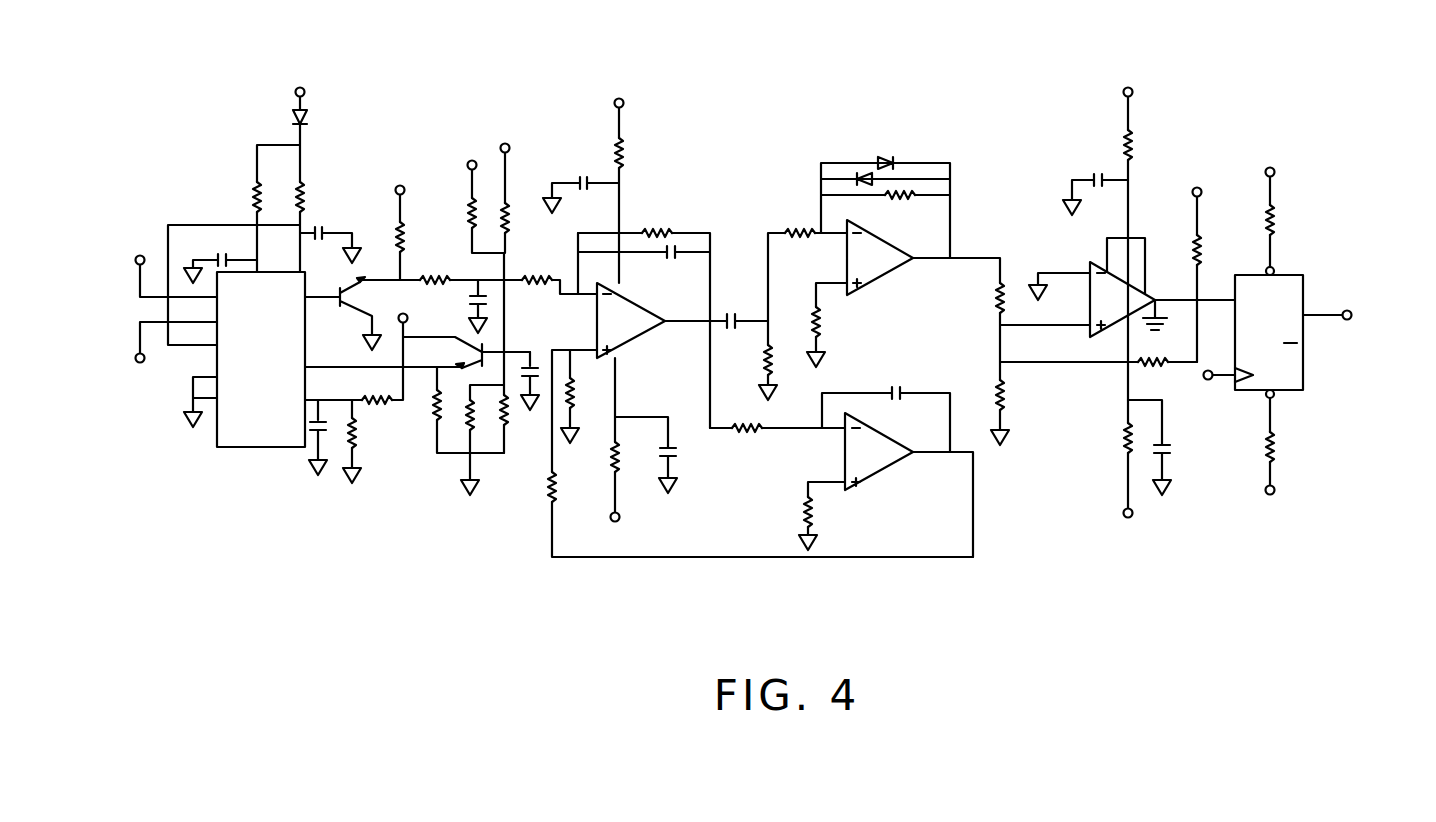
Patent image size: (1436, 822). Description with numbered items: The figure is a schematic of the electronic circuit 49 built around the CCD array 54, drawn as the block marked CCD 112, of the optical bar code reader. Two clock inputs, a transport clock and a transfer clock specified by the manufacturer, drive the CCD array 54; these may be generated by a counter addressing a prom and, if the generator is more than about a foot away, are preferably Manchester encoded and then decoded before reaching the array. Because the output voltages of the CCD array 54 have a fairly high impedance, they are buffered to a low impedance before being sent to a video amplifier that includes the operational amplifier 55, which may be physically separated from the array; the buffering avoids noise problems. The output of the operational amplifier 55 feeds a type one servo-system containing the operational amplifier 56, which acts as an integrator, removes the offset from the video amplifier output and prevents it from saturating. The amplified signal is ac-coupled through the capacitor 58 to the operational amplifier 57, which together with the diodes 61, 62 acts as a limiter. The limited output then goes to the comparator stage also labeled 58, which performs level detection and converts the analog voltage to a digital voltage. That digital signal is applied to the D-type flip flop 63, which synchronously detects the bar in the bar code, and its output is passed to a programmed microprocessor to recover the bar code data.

The electronic circuit 49 is at (765, 50).
The CCD array 54 is at (267, 450).
The CCD sensor 112 is at (261, 359).
The operational amplifier 55 is at (628, 322).
The operational amplifier 56 is at (875, 476).
The operational amplifier 57 is at (882, 274).
The capacitor 58 is at (749, 318).
The diode 61 is at (906, 142).
The diode 62 is at (855, 144).
The D-type flip flop 63 is at (1252, 392).